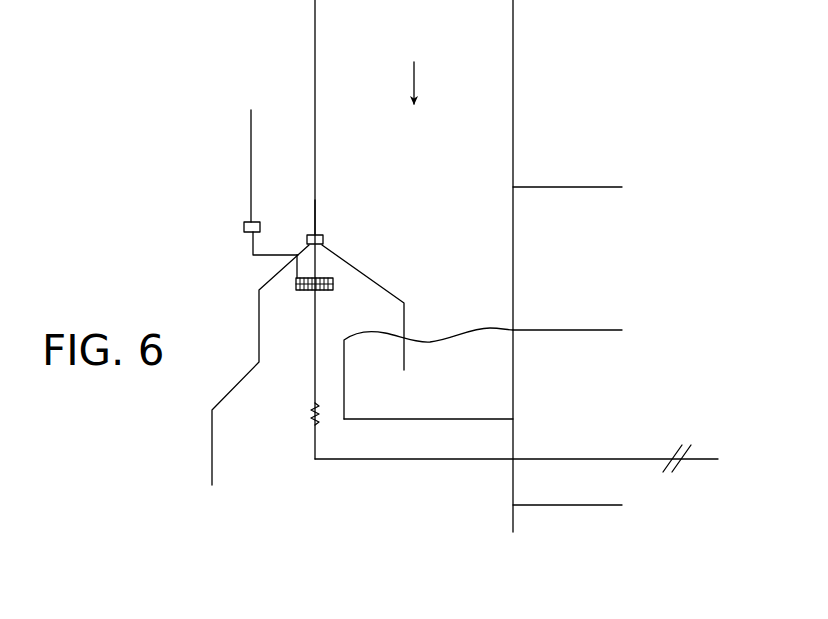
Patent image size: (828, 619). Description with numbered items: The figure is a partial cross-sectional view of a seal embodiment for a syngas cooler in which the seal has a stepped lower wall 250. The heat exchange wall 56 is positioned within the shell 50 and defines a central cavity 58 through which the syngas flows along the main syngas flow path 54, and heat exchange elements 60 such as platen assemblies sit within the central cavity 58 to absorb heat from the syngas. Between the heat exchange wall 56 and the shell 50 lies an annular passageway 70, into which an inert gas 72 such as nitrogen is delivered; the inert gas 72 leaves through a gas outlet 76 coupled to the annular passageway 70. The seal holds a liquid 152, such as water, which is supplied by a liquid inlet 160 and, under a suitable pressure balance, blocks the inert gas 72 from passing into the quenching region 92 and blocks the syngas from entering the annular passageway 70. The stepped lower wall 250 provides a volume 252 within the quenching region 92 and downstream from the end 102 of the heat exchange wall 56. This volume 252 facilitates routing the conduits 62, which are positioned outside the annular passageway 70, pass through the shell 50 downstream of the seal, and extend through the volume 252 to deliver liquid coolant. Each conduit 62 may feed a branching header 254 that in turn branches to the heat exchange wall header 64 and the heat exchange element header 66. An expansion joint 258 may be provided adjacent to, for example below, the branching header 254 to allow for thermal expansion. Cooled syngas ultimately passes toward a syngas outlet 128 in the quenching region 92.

The shell 50 is at (514, 34).
The main syngas flow path 54 is at (183, 237).
The heat exchange wall 56 is at (316, 34).
The central cavity 58 is at (267, 39).
The heat exchange elements 60 is at (251, 165).
The conduits 62 is at (570, 458).
The header of the heat exchange wall 64 is at (324, 238).
The header of the heat exchange elements 66 is at (262, 228).
The annular passageway 70 is at (365, 107).
The inert gas 72 is at (414, 78).
The gas outlet 76 is at (567, 186).
The quenching region 92 is at (558, 556).
The end of the heat exchange wall 102 is at (316, 196).
The syngas outlet 128 is at (567, 505).
The liquid 152 is at (480, 389).
The liquid inlet 160 is at (567, 329).
The stepped lower wall 250 is at (221, 355).
The volume 252 is at (308, 347).
The branching header 254 is at (333, 285).
The expansion joint 258 is at (311, 411).